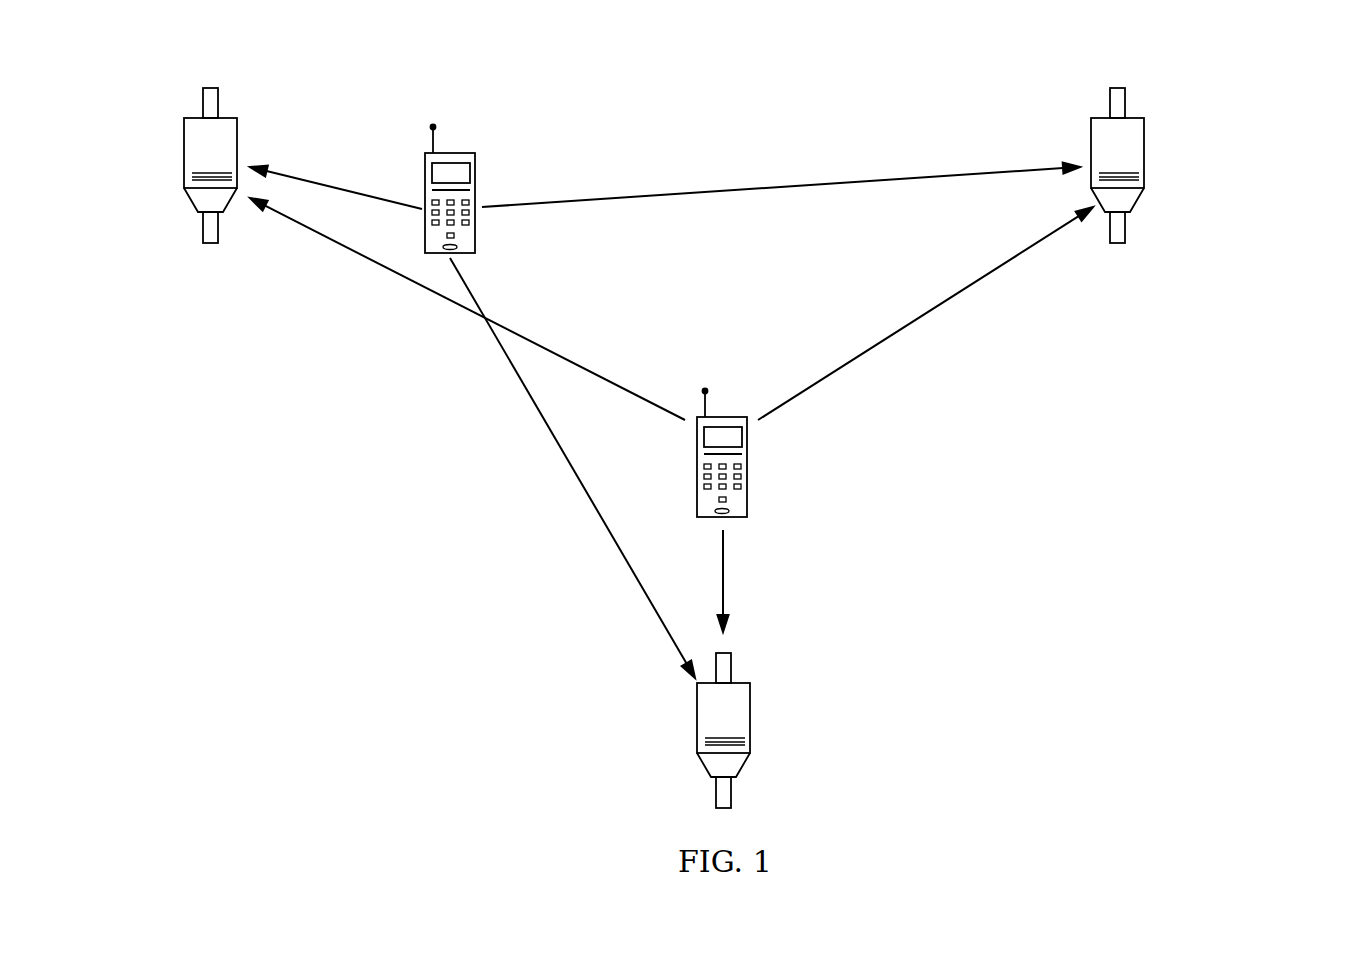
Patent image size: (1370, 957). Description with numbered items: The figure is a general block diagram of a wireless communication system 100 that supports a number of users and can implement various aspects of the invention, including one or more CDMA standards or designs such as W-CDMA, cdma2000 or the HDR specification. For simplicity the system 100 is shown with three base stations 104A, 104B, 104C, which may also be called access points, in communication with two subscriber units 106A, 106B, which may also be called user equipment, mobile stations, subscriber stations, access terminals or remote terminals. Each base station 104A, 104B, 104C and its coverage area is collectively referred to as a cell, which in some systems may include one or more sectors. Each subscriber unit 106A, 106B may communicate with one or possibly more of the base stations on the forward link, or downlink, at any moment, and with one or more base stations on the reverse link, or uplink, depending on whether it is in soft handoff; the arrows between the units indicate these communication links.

The wireless communication system 100 is at (1279, 76).
The base station 104A is at (227, 117).
The base station 104B is at (1132, 117).
The base station 104C is at (737, 682).
The subscriber unit 106A is at (450, 153).
The subscriber unit 106B is at (735, 518).